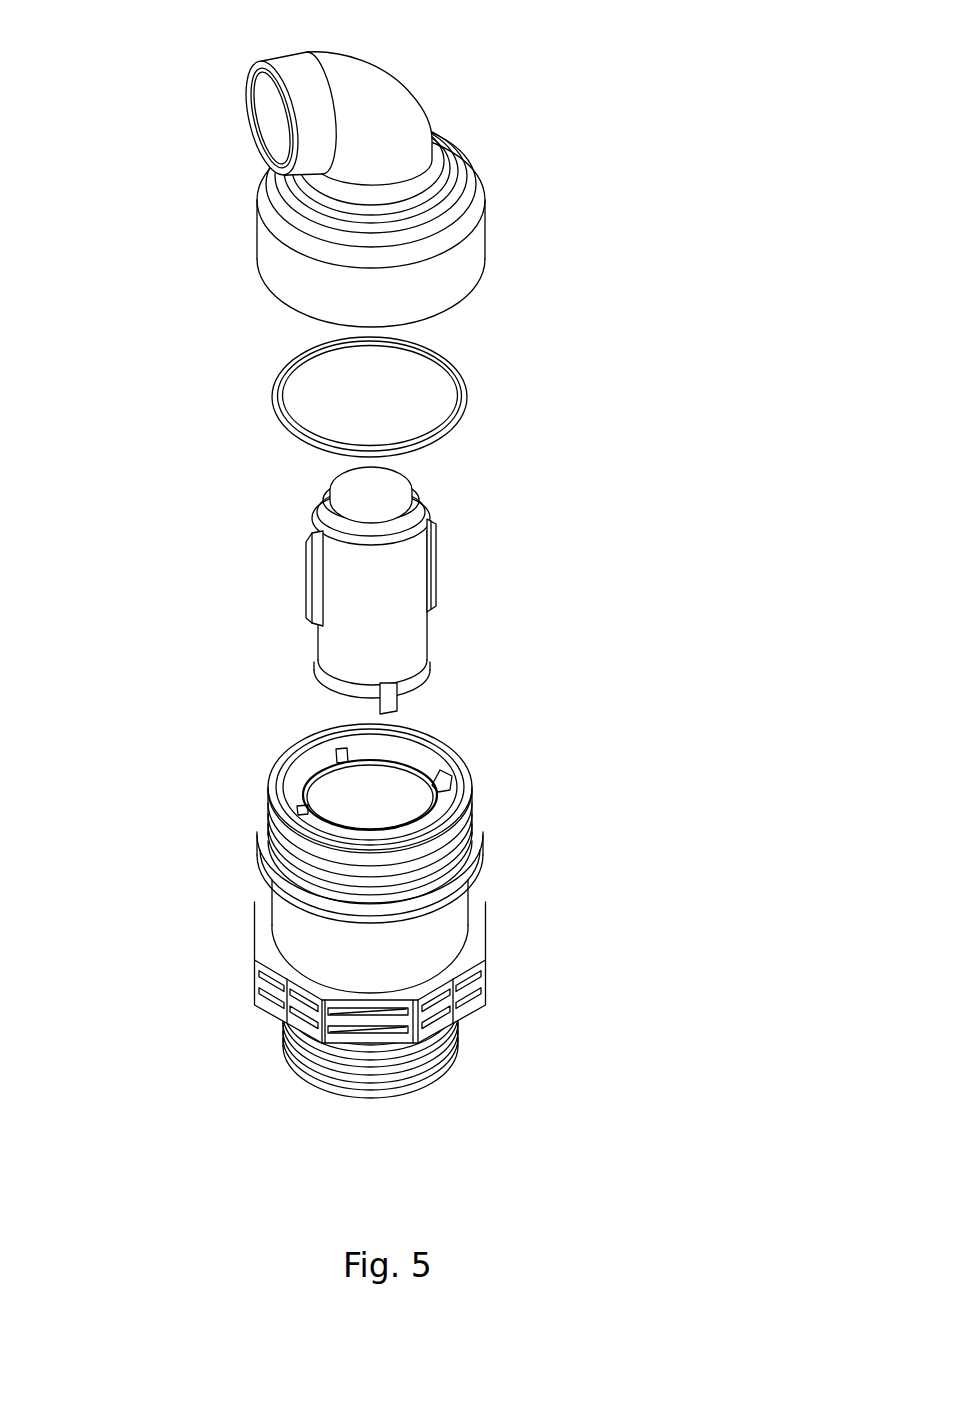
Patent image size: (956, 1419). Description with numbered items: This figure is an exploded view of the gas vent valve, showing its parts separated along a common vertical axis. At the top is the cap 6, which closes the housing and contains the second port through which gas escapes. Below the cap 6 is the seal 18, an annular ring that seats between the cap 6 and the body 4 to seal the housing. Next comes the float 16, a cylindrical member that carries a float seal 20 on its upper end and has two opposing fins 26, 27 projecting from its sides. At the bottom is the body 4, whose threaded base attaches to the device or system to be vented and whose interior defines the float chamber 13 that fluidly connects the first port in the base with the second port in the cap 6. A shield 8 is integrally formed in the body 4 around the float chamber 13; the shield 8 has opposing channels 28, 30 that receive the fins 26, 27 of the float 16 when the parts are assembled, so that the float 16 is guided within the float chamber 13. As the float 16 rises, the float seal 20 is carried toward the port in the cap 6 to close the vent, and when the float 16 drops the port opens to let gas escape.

The body 4 is at (375, 882).
The cap 6 is at (475, 167).
The shield 8 is at (313, 783).
The float chamber 13 is at (355, 792).
The float 16 is at (375, 590).
The seal 18 is at (467, 392).
The float seal 20 is at (312, 503).
The fin 26 is at (305, 585).
The fin 27 is at (437, 552).
The channel 28 is at (270, 808).
The channel 30 is at (445, 778).